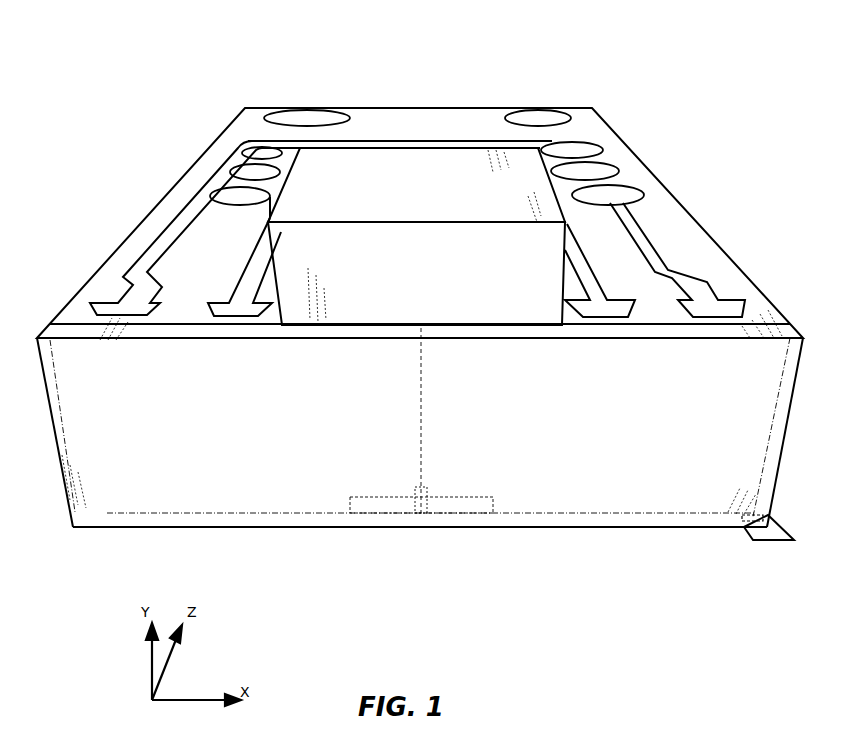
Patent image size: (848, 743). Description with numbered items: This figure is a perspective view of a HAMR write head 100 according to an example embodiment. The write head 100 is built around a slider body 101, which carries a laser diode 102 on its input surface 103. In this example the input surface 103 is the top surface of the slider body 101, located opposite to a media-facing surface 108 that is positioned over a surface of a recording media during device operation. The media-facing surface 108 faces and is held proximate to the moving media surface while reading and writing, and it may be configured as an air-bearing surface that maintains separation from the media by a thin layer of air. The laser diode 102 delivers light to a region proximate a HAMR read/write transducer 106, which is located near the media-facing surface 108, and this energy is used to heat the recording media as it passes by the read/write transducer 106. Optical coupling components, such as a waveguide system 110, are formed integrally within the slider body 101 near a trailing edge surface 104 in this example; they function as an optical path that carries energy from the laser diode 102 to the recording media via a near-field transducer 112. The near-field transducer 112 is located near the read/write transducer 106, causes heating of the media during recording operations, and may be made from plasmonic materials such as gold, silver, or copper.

The HAMR write head 100 is at (608, 52).
The slider body 101 is at (218, 137).
The laser diode 102 is at (375, 158).
The input surface 103 is at (102, 283).
The trailing edge surface 104 is at (133, 502).
The HAMR read/write transducer 106 is at (427, 513).
The media-facing surface 108 is at (785, 542).
The waveguide system 110 is at (421, 410).
The near-field transducer 112 is at (422, 513).